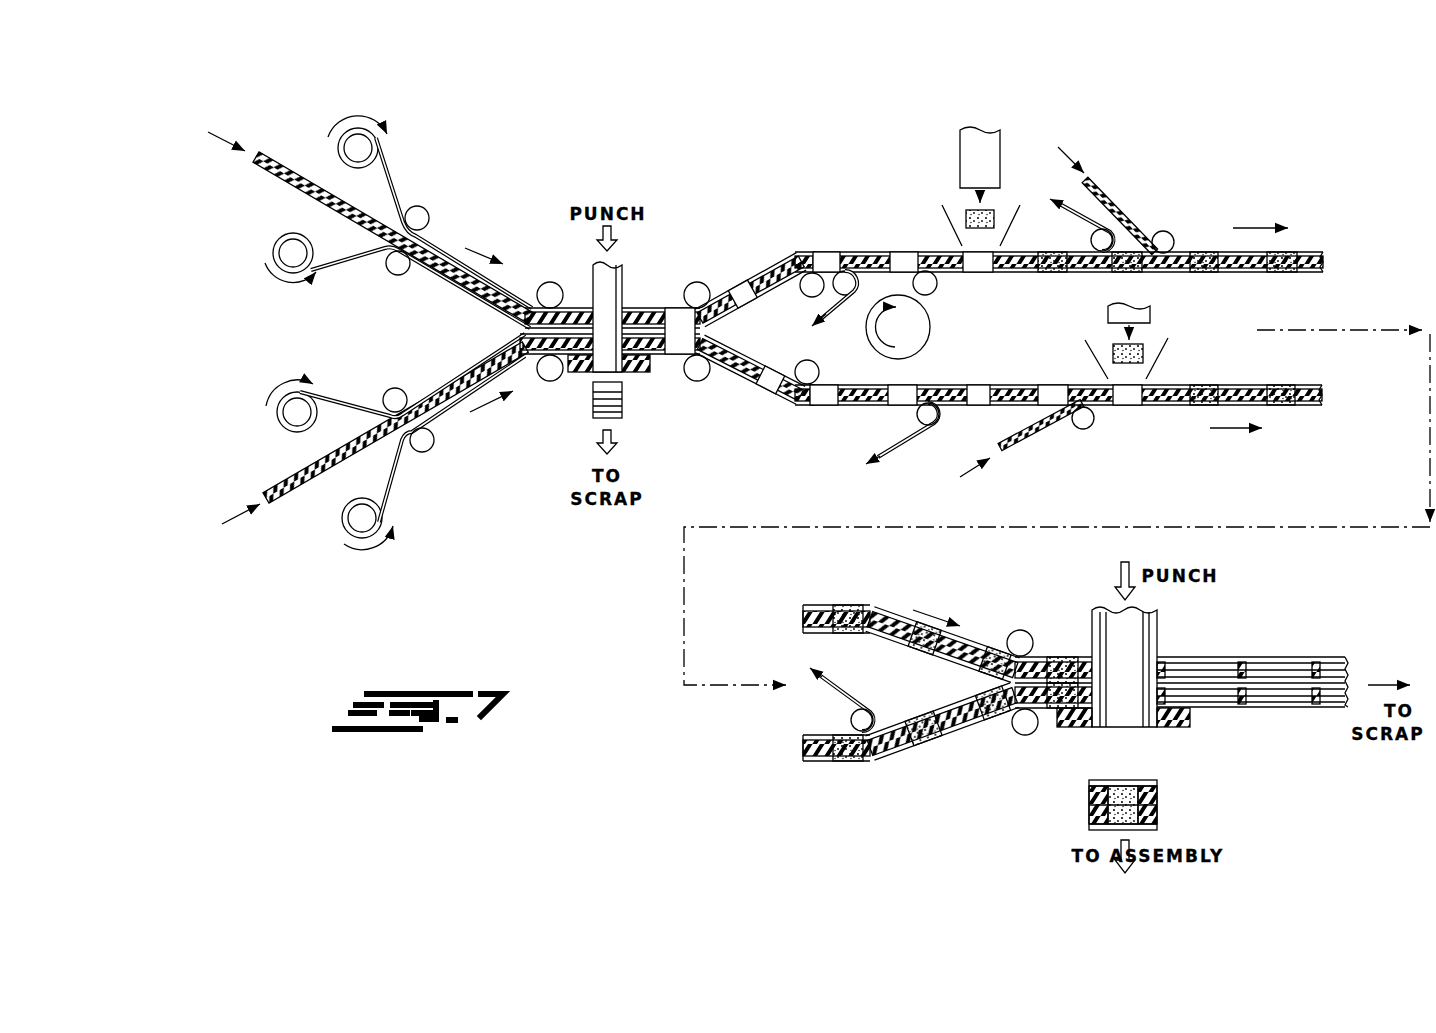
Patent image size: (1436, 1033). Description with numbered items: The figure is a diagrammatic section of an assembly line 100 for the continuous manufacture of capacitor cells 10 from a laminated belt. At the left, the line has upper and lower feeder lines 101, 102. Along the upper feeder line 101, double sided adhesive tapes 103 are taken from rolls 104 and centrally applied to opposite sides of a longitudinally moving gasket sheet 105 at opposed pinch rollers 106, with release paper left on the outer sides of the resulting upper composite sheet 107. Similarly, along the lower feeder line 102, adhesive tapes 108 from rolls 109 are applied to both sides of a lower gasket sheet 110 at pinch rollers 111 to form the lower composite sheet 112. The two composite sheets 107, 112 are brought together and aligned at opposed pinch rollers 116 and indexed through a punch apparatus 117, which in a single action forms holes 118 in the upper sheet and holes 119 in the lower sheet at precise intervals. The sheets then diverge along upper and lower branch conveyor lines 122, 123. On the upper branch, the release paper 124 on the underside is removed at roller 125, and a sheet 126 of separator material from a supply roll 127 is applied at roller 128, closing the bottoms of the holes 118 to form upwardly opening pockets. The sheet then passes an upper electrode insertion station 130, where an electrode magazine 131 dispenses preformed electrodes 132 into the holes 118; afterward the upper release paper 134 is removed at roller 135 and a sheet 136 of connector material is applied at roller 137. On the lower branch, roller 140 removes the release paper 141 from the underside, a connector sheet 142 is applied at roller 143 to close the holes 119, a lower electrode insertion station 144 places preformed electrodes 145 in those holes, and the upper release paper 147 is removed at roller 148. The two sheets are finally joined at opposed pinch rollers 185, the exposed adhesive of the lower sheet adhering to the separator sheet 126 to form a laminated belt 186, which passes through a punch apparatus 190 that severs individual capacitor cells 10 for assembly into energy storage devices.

The capacitor cell 10 is at (1160, 800).
The assembly line 100 is at (1244, 156).
The upper feeder line 101 is at (458, 198).
The lower feeder line 102 is at (458, 432).
The double sided adhesive strips or tapes 103 is at (394, 172).
The rolls 104 is at (340, 150).
The gasket sheet 105 is at (300, 194).
The opposed pinch rollers 106 is at (430, 218).
The upper composite sheet 107 is at (512, 278).
The double sided adhesive strips or tapes 108 is at (352, 402).
The rolls 109 is at (280, 432).
The lower gasket sheet 110 is at (300, 455).
The opposed pinch rollers 111 is at (395, 387).
The lower composite sheet 112 is at (458, 372).
The opposed pinch rollers 116 is at (550, 282).
The punch apparatus 117 is at (628, 248).
The holes 118 is at (620, 302).
The holes 119 is at (612, 358).
The upper branch conveyor line 122 is at (882, 235).
The lower branch conveyor line 123 is at (832, 421).
The release paper 124 is at (842, 297).
The roller 125 is at (794, 310).
The sheet of separator material 126 is at (931, 294).
The supply roll 127 is at (930, 333).
The roller 128 is at (938, 286).
The upper electrode insertion station 130 is at (1005, 153).
The electrode magazine 131 is at (958, 138).
The preformed electrodes 132 is at (962, 212).
The release paper 134 is at (1088, 222).
The roller 135 is at (1091, 240).
The sheet of connector material 136 is at (1127, 214).
The roller 137 is at (1170, 232).
The roller 140 is at (916, 415).
The release paper 141 is at (905, 442).
The sheet of connector material 142 is at (1030, 426).
The roller 143 is at (1094, 426).
The lower electrode insertion station 144 is at (1156, 313).
The preformed electrodes 145 is at (1112, 348).
The release paper 147 is at (864, 702).
The roller 148 is at (850, 718).
The opposed pinch rollers 185 is at (1018, 630).
The laminated belt 186 is at (1062, 648).
The punch apparatus 190 is at (1162, 623).